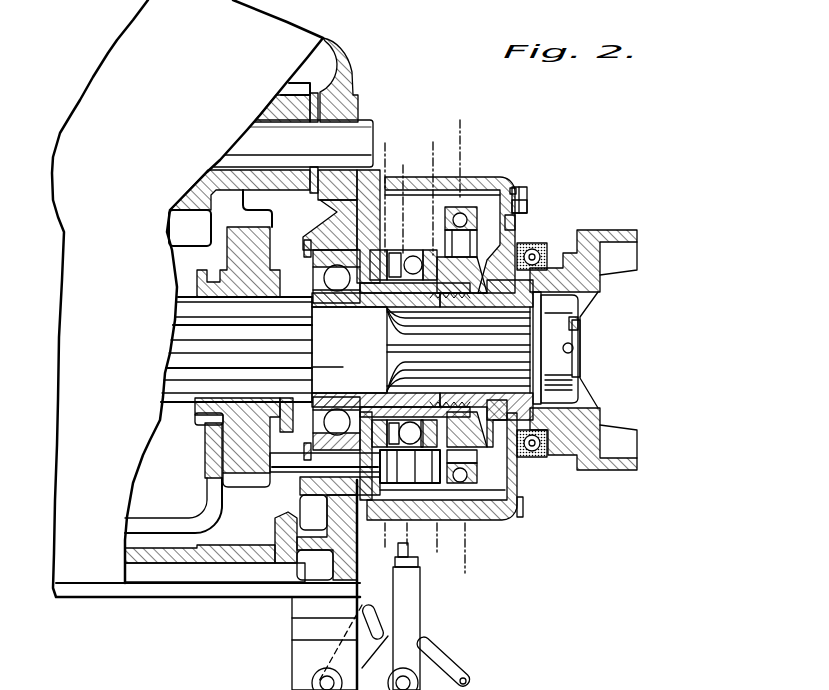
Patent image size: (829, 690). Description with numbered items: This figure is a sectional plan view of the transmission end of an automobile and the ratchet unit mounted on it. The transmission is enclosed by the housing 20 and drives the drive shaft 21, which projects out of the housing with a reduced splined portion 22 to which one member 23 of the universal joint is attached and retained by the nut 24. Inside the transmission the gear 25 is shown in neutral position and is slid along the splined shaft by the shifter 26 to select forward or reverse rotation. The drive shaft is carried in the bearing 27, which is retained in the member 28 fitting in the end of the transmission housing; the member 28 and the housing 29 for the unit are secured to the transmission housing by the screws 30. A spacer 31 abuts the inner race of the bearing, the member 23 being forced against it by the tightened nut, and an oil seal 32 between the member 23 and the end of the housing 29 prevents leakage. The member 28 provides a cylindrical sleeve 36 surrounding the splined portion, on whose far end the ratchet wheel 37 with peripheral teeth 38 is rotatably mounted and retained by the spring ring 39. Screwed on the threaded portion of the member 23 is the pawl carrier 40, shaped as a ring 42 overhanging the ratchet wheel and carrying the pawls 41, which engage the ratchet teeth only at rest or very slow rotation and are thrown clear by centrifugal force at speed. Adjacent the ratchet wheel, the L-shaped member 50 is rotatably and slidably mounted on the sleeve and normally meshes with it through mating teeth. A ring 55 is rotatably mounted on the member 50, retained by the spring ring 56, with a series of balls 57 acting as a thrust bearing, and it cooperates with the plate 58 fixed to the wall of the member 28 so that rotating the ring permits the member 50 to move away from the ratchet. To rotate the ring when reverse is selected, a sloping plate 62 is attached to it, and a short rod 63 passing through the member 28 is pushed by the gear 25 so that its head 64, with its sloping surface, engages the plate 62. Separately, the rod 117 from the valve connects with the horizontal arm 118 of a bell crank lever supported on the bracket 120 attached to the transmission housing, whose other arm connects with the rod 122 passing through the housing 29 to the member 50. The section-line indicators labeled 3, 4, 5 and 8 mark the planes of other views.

The section line 3- 3 is at (374, 143).
The section line 4- 4 is at (392, 165).
The section line 5- 5 is at (421, 142).
The section line 8- 8 is at (448, 120).
The transmission housing 20 is at (355, 70).
The drive shaft 21 is at (165, 398).
The reduced splined portion 22 is at (578, 368).
The universal joint member 23 is at (603, 230).
The nut 24 is at (580, 336).
The gear 25 is at (270, 235).
The shifter 26 is at (205, 470).
The bearing 27 is at (316, 425).
The member 28 is at (306, 222).
The housing 29 is at (482, 177).
The screws 30 is at (528, 200).
The spacer 31 is at (370, 392).
The oil seal 32 is at (545, 457).
The sleeve 36 is at (400, 372).
The ratchet wheel 37 is at (443, 253).
The peripheral teeth 38 is at (515, 465).
The spring ring 39 is at (524, 190).
The pawl carrier 40 is at (518, 222).
The pawls 41 is at (447, 233).
The ring 42 is at (508, 200).
The member 50 is at (432, 253).
The ring 55 is at (378, 252).
The spring ring 56 is at (383, 298).
The balls 57 is at (415, 484).
The plate 58 is at (350, 300).
The plate 62 is at (440, 455).
The rod 63 is at (290, 473).
The head 64 is at (395, 484).
The rod 117 is at (454, 661).
The horizontal arm 118 is at (378, 648).
The bracket 120 is at (292, 647).
The rod 122 is at (418, 562).